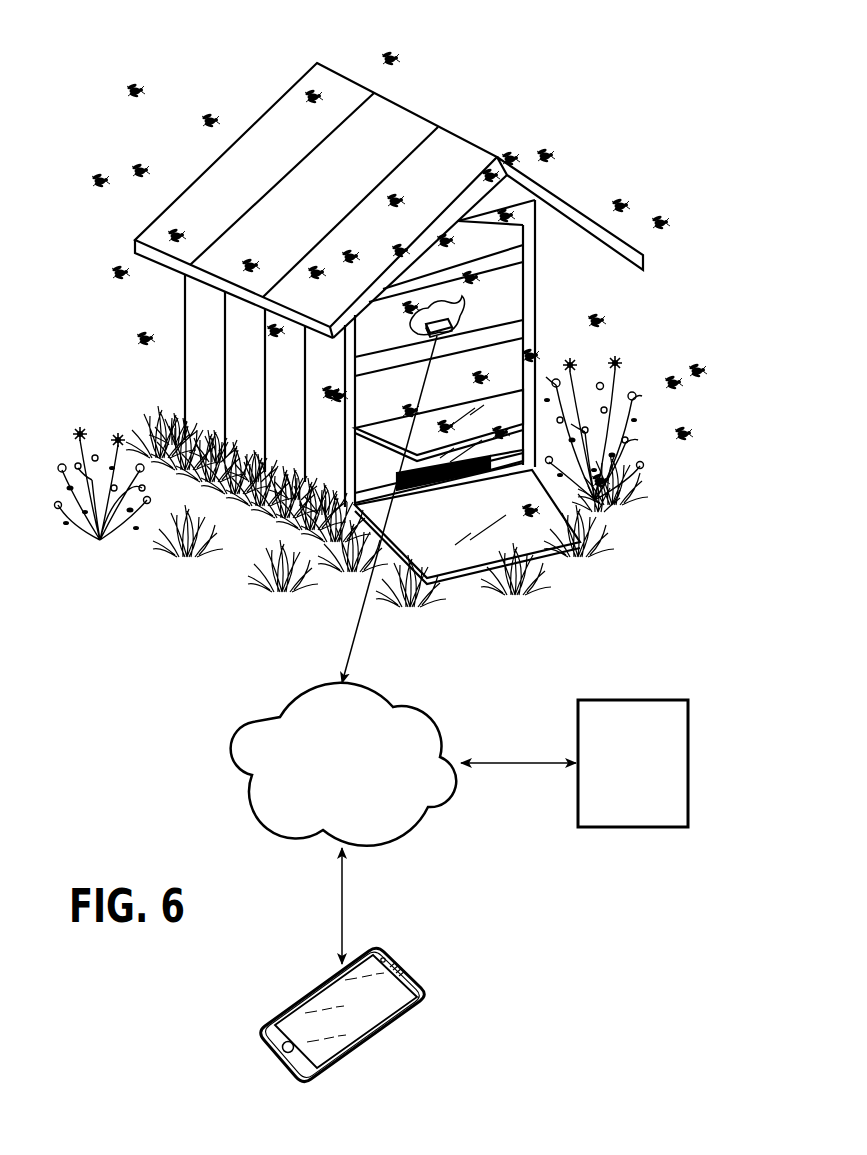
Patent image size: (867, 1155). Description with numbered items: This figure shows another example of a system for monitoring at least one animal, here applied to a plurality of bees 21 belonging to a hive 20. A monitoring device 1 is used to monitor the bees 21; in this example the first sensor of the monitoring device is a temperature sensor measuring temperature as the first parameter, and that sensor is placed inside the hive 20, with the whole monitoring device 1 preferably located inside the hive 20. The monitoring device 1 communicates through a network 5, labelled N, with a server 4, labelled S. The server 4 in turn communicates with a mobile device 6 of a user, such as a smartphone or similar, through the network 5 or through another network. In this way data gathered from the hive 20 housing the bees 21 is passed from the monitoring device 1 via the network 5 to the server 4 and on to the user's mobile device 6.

The hive 20 is at (495, 128).
The monitoring device 1 is at (464, 318).
The bees 21 is at (609, 317).
The network 5 is at (252, 720).
The server 4 is at (656, 699).
The mobile device 6 is at (403, 965).